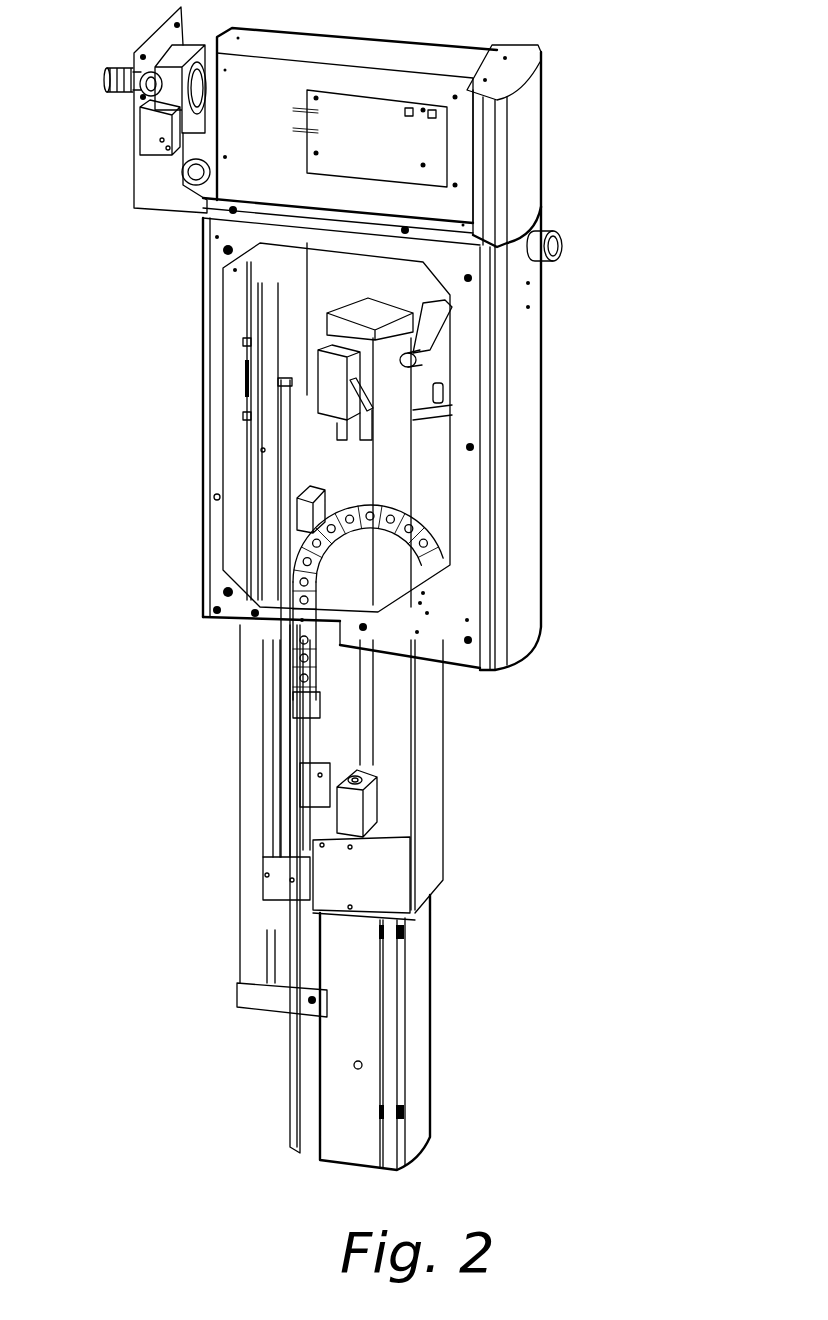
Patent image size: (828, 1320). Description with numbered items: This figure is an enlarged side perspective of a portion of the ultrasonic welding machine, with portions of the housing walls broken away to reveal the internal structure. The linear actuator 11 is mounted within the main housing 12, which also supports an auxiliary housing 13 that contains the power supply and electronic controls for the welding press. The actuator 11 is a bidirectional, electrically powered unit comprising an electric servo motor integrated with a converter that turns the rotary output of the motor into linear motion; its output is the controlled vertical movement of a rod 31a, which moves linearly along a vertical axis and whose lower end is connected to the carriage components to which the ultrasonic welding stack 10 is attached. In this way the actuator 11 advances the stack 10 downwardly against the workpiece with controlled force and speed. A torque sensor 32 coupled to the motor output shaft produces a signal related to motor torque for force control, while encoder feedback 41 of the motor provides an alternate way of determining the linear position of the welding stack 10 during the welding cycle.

The ultrasonic welding stack 10 is at (427, 1030).
The linear actuator 11 is at (407, 483).
The main housing 12 is at (523, 567).
The auxiliary housing 13 is at (527, 170).
The rod 31a is at (374, 723).
The torque sensor 32 is at (337, 373).
The encoder feedback 41 is at (340, 313).